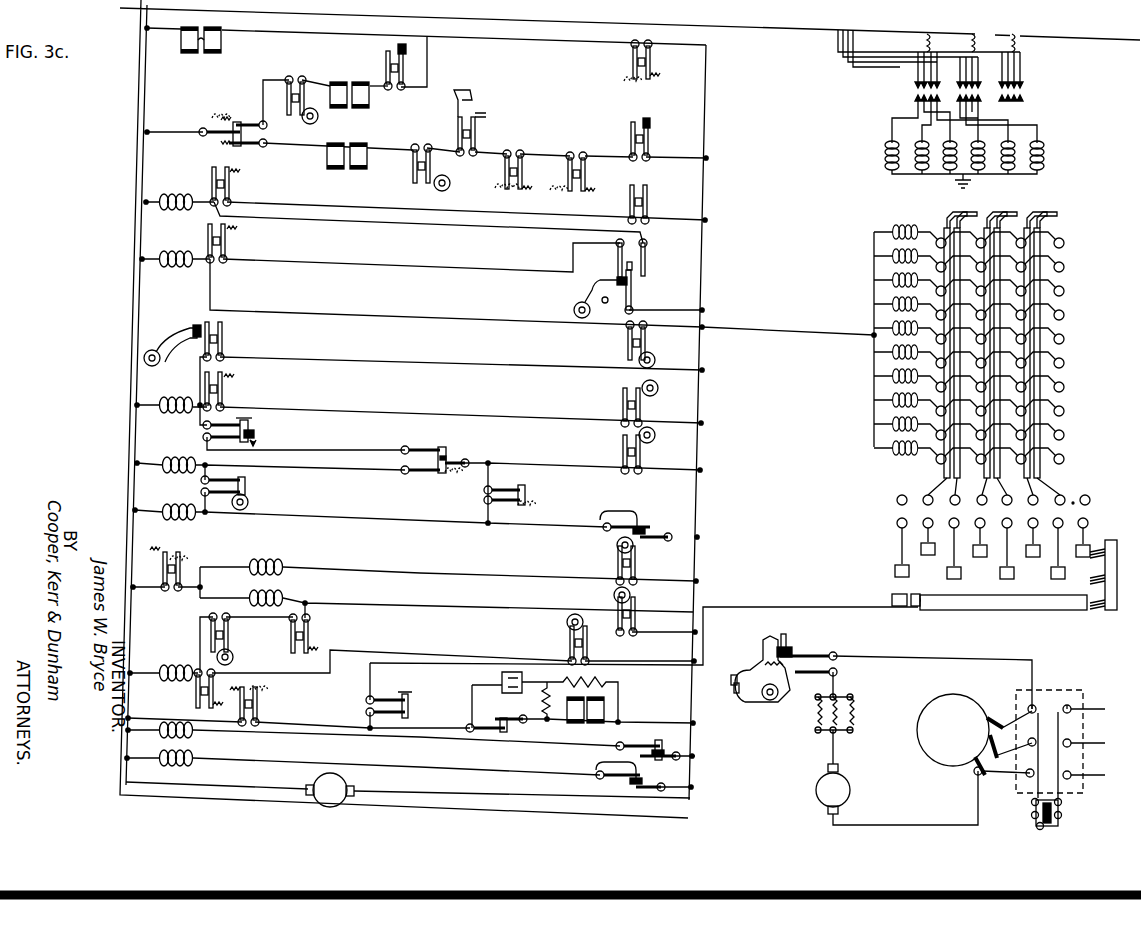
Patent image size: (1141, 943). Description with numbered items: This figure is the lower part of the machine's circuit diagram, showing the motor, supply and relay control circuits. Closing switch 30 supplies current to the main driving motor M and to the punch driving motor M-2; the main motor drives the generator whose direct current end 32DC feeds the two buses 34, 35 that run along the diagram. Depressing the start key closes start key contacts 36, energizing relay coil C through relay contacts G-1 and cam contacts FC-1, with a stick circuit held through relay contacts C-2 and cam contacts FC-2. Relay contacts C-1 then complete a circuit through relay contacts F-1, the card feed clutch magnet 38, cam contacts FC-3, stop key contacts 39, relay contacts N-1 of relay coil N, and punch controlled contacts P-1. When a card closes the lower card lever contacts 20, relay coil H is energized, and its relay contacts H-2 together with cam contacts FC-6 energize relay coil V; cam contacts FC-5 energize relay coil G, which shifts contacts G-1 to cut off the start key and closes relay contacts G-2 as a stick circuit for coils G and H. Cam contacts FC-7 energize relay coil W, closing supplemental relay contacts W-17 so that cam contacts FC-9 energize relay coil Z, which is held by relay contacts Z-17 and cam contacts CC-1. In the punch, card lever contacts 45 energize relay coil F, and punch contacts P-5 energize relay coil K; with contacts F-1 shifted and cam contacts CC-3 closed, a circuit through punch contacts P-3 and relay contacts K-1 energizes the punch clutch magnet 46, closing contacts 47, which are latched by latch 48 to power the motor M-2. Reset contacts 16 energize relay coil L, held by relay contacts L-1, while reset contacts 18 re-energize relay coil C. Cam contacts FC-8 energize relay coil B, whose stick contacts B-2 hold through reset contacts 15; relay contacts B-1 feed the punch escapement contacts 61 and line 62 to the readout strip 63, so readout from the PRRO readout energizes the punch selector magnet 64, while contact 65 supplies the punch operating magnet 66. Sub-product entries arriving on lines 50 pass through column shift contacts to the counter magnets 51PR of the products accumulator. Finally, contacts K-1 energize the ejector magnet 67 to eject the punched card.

The bus 34 is at (143, 190).
The bus 35 is at (145, 299).
The ejector magnet 67 is at (221, 41).
The relay contacts K-1 is at (655, 58).
The relay coil K is at (624, 80).
The punch contacts P-3 is at (408, 72).
The cam contacts CC-3 is at (296, 78).
The punch clutch magnet 46 is at (362, 98).
The relay contacts F-1 is at (252, 133).
The relay coil F is at (222, 112).
The card feed clutch magnet 38 is at (365, 157).
The cam contacts FC-3 is at (430, 165).
The stop key contacts 39 is at (477, 142).
The relay contacts C-1 is at (518, 152).
The relay coil C is at (496, 186).
The relay contacts N-1 is at (583, 156).
The relay coil N is at (566, 194).
The punch controlled contacts P-1 is at (640, 122).
The relay coil L is at (184, 202).
The relay contacts L-1 is at (230, 190).
The relay coil B is at (186, 260).
The stick contacts B-2 is at (228, 252).
The reset contacts 15 is at (617, 262).
The reset contacts 16 is at (645, 258).
The reset contacts 18 is at (224, 345).
The relay contacts C-2 is at (226, 394).
The start key contacts 36 is at (222, 441).
The relay coil G is at (176, 462).
The cam contacts FC-5 is at (248, 487).
The relay coil H is at (168, 511).
The relay contacts G-1 is at (446, 452).
The relay contacts G-2 is at (510, 490).
The lower card lever contacts 20 is at (650, 522).
The cam contacts FC-8 is at (627, 338).
The cam contacts FC-2 is at (626, 400).
The cam contacts FC-1 is at (625, 445).
The cam contacts FC-6 is at (620, 566).
The cam contacts FC-7 is at (620, 626).
The cam contacts CC-1 is at (570, 650).
The relay contacts H-2 is at (168, 590).
The relay coil V is at (272, 560).
The relay coil W is at (287, 596).
The cam contacts FC-9 is at (225, 637).
The supplemental relay contacts W-17 is at (310, 634).
The relay coil Z is at (168, 666).
The relay contacts Z-17 is at (200, 694).
The relay contacts B-1 is at (258, 722).
The punch escapement contacts 61 is at (399, 702).
The contact 65 is at (503, 731).
The punch operating magnet 66 is at (603, 708).
The punch contacts P-5 is at (668, 740).
The card lever contacts 45 is at (620, 782).
The D. C. end of the A. C.-D. C. generator 32DC is at (312, 793).
The lines 50 is at (872, 68).
The counter magnets 51PR is at (1044, 168).
The PRRO readout PRRO is at (938, 338).
The punch selector magnet 64 is at (890, 297).
The readout strip 63 is at (918, 563).
The line 62 is at (808, 612).
The contacts 47 is at (808, 662).
The latch 48 is at (755, 697).
The punch driving motor M-2 is at (822, 786).
The main driving motor M is at (974, 734).
The switch 30 is at (1033, 820).